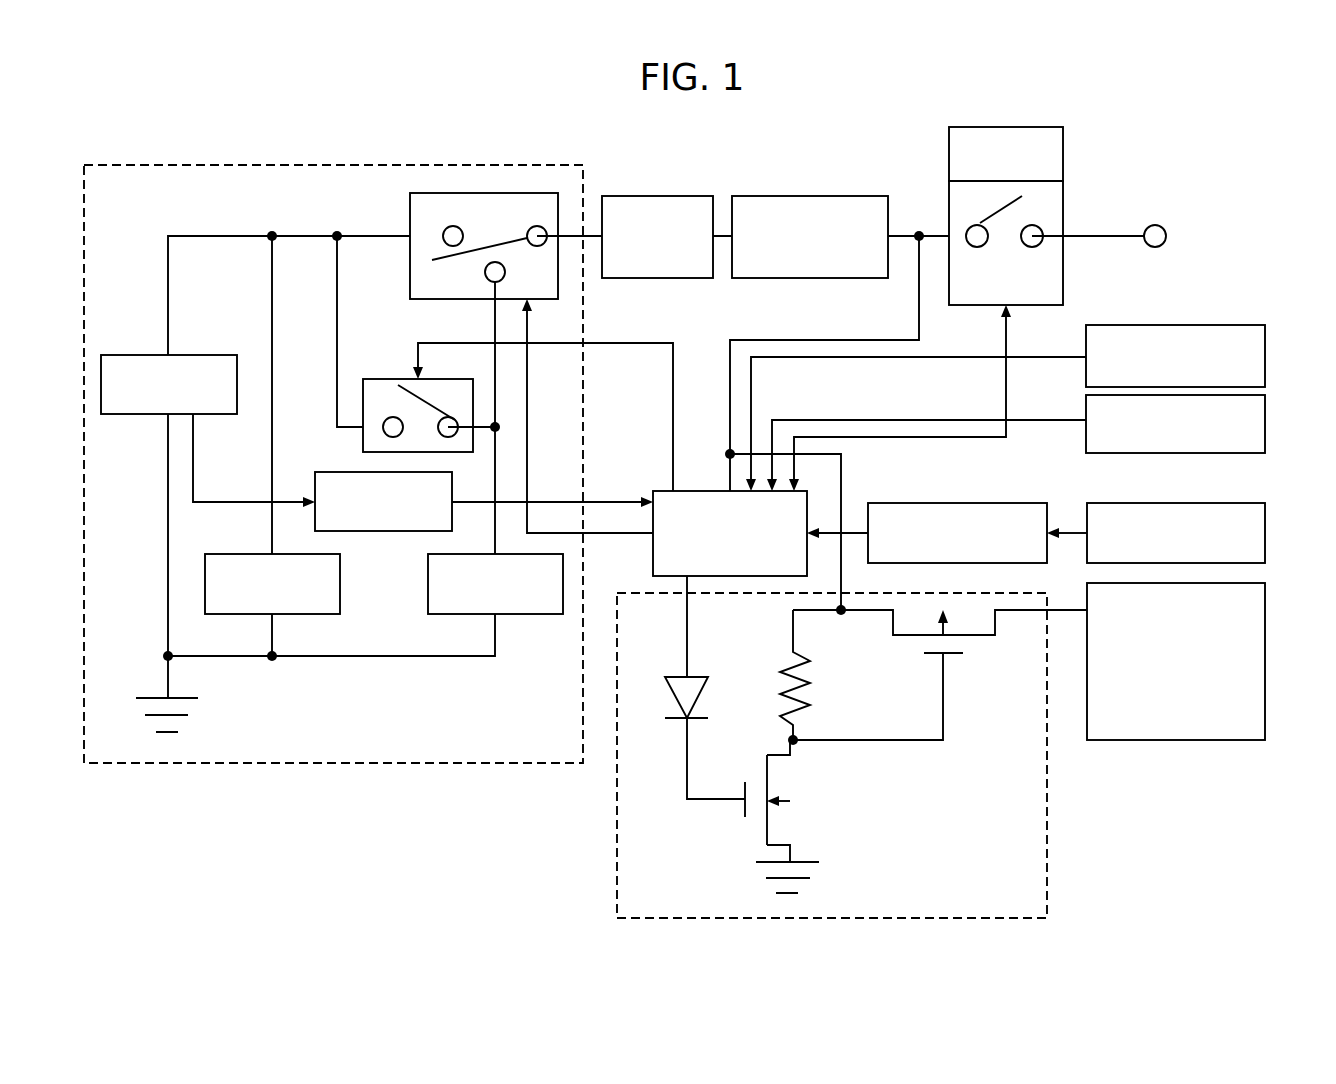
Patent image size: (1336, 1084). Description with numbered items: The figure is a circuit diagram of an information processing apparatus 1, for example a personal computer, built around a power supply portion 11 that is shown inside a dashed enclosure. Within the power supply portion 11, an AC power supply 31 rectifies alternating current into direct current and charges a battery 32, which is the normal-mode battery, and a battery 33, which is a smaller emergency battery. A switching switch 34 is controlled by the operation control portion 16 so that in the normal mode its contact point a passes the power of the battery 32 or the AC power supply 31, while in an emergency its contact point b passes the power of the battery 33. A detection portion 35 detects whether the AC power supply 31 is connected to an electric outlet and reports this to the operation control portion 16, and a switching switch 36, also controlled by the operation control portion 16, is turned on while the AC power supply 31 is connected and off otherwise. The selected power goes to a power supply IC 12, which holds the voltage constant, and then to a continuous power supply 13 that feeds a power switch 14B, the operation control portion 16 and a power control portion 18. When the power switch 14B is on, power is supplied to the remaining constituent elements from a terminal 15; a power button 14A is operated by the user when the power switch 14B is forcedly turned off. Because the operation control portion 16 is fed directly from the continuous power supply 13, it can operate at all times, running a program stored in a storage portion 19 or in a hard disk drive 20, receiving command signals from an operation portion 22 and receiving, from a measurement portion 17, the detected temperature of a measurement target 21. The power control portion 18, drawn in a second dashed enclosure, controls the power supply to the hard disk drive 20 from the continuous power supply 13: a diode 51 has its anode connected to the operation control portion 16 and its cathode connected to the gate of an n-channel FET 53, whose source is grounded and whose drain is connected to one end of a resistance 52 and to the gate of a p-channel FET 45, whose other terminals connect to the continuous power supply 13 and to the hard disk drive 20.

The information processing apparatus 1 is at (1236, 124).
The power supply portion 11 is at (513, 763).
The power supply IC 12 is at (659, 196).
The continuous power supply 13 is at (812, 196).
The power button 14A is at (1065, 157).
The power switch 14B is at (1065, 207).
The terminal 15 is at (1155, 248).
The operation control portion 16 is at (702, 490).
The measurement portion 17 is at (959, 503).
The power control portion 18 is at (1048, 882).
The storage portion 19 is at (1267, 422).
The hard disk drive 20 is at (1267, 642).
The measurement target 21 is at (1267, 530).
The operation portion 22 is at (1267, 355).
The AC power supply 31 is at (138, 354).
The battery 32 is at (227, 554).
The battery 33 is at (475, 554).
The switching switch 34 is at (410, 282).
The detection portion 35 is at (373, 532).
The switching switch 36 is at (383, 378).
The transistor 45 is at (955, 655).
The diode 51 is at (673, 720).
The resistance 52 is at (785, 672).
The n-channel type FET 53 is at (740, 812).